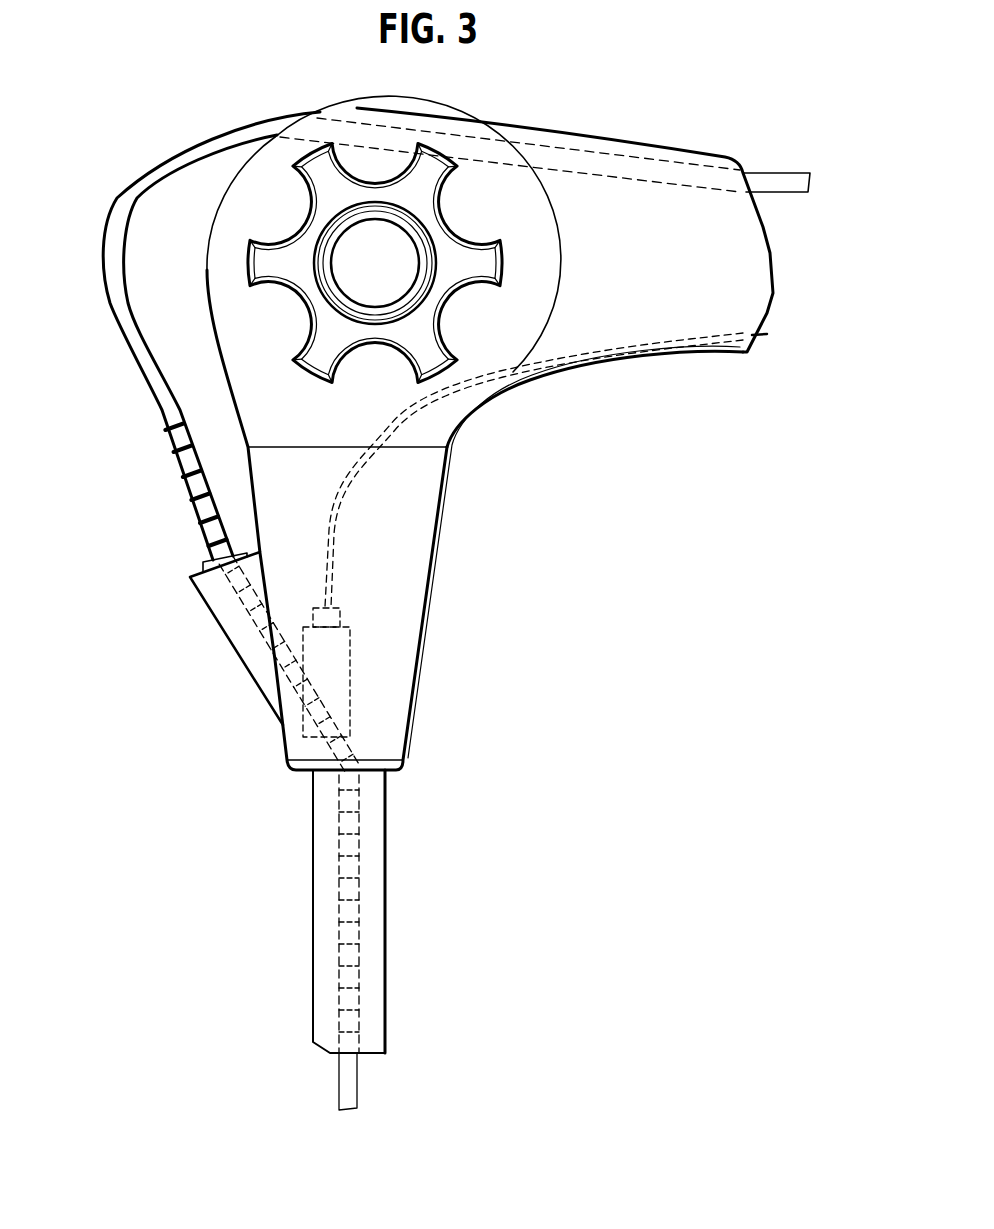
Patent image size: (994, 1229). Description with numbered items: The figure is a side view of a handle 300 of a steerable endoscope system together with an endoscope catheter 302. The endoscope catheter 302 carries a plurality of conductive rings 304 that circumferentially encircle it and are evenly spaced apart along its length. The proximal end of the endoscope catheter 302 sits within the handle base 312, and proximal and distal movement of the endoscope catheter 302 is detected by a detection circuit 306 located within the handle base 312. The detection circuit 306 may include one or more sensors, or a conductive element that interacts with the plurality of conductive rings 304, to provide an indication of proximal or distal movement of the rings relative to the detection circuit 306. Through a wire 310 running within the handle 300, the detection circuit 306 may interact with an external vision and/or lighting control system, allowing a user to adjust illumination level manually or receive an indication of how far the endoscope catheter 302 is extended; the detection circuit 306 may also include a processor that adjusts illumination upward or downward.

The handle 300 is at (637, 130).
The endoscope catheter 302 is at (127, 178).
The plurality of conductive rings 304 is at (208, 518).
The detection circuit 306 is at (335, 655).
The wire 310 is at (420, 407).
The handle base 312 is at (400, 542).